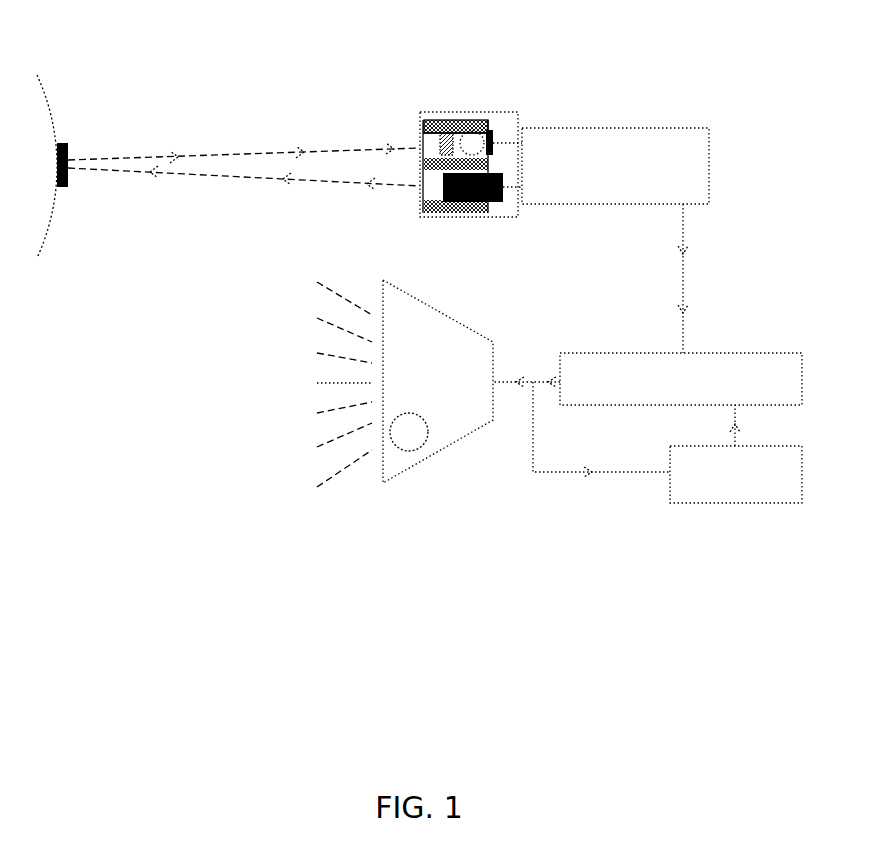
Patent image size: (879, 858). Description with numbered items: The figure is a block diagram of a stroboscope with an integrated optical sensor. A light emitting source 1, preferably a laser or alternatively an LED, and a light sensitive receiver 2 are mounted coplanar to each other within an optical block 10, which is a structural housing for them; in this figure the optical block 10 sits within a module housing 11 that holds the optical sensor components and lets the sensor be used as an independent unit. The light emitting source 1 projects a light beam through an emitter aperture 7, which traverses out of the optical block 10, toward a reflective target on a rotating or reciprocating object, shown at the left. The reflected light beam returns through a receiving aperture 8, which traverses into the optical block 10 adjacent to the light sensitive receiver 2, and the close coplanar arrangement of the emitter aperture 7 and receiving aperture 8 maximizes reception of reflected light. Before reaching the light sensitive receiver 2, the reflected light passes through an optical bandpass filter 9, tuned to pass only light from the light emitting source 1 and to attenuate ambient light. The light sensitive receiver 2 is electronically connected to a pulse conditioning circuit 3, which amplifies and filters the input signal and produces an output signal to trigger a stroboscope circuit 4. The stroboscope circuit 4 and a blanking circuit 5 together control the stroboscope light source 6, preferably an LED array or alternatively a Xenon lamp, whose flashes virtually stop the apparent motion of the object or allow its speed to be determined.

The light emitting source 1 is at (441, 206).
The light sensitive receiver 2 is at (477, 138).
The pulse conditioning circuit 3 is at (657, 128).
The stroboscope circuit 4 is at (730, 353).
The blanking circuit 5 is at (757, 503).
The stroboscope light source 6 is at (460, 438).
The emitter aperture 7 is at (413, 184).
The receiving aperture 8 is at (416, 147).
The optical bandpass filter 9 is at (438, 133).
The optical block 10 is at (438, 132).
The module housing 11 is at (482, 216).